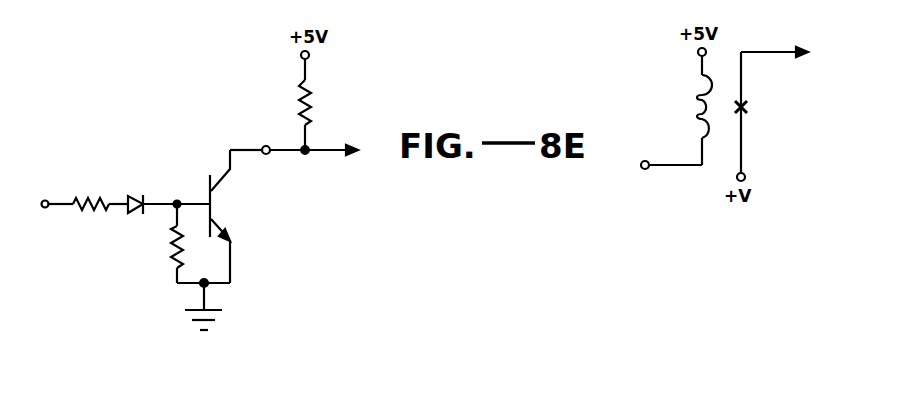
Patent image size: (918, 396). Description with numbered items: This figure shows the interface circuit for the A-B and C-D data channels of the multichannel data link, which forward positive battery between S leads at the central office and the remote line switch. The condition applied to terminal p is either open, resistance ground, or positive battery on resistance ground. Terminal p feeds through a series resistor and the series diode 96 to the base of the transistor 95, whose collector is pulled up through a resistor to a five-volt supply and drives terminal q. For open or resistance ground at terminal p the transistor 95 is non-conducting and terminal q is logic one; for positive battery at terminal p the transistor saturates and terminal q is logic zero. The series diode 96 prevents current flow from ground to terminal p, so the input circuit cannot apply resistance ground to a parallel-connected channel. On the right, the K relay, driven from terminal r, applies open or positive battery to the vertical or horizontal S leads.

The transistor 95 is at (222, 210).
The series diode 96 is at (141, 194).
The K relay K is at (690, 106).
The terminal p is at (35, 206).
The terminal q is at (266, 140).
The terminal r is at (636, 166).